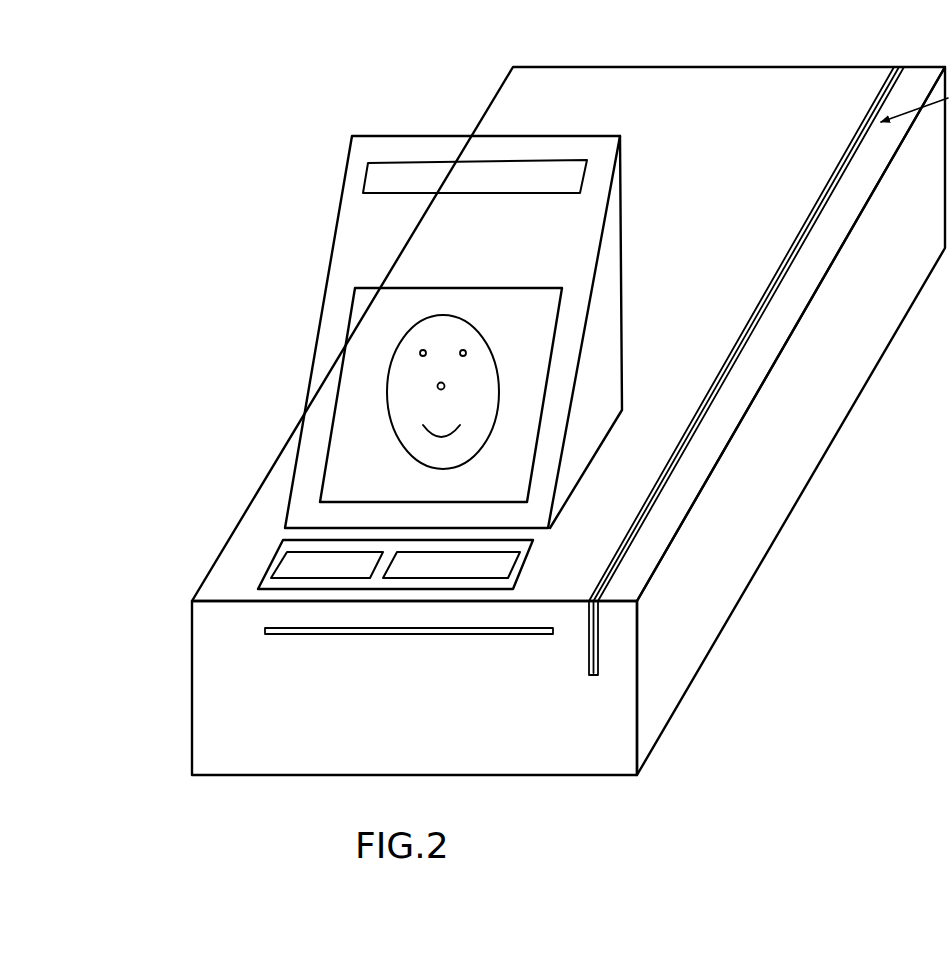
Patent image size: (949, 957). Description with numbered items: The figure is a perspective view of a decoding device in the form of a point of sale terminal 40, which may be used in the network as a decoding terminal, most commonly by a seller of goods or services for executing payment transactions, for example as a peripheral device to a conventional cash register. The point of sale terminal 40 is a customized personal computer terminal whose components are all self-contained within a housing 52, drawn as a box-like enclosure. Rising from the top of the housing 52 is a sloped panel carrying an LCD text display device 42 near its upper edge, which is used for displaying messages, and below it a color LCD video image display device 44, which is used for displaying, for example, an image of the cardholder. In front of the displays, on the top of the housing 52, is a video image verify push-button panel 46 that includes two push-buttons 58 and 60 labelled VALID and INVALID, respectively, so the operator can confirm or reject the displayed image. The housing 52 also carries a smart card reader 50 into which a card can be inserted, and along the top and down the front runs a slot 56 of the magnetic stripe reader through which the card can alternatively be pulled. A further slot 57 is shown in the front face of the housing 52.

The point of sale terminal 40 is at (181, 756).
The LCD text display device 42 is at (582, 160).
The color LCD video image display device 44 is at (528, 407).
The video image verify push-button panel 46 is at (527, 560).
The smart card reader 50 is at (436, 616).
The housing 52 is at (588, 758).
The slot of the magnetic stripe reader 56 is at (602, 676).
The card exit slot 57 is at (343, 636).
The VALID push-button 58 is at (286, 572).
The INVALID push-button 60 is at (470, 580).